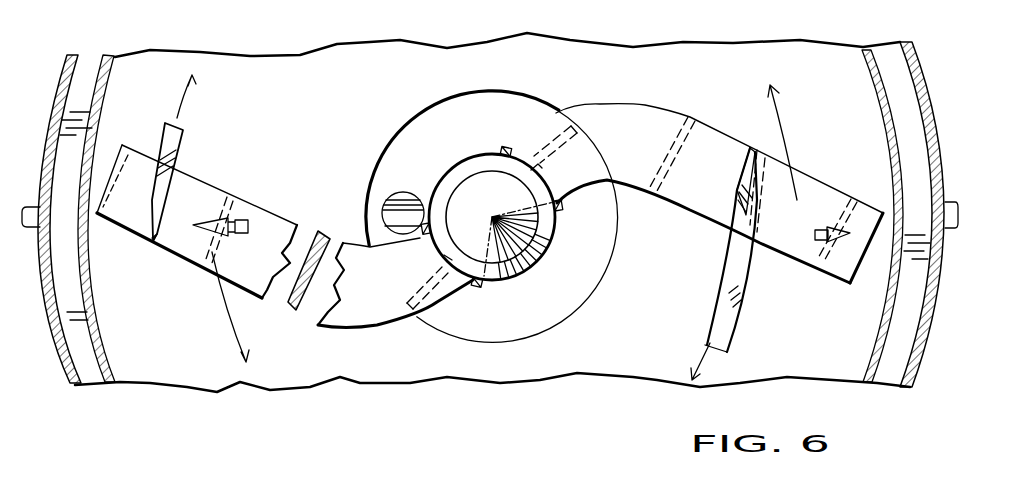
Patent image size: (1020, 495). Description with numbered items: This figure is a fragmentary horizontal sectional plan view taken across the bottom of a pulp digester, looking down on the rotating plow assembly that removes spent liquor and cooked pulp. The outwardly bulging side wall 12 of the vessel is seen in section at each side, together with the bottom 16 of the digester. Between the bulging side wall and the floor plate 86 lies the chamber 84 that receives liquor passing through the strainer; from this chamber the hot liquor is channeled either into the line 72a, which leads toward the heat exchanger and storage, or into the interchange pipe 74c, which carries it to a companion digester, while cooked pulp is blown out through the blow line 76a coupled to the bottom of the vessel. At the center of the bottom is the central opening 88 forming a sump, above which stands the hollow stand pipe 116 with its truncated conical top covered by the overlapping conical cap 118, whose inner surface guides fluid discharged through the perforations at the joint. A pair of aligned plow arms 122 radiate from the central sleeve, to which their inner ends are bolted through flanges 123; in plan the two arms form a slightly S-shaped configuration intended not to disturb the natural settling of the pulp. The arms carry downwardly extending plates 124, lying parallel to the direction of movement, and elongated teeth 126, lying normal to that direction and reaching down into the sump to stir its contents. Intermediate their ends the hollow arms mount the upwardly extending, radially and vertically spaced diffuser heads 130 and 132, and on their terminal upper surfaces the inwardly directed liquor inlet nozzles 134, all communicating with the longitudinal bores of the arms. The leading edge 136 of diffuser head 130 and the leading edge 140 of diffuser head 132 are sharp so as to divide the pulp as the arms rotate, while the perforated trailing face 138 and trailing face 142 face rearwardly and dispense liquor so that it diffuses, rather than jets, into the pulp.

The side wall 12 is at (295, 310).
The bottom 16 is at (192, 360).
The line 72a is at (33, 215).
The interchange pipe 74c is at (935, 212).
The blow line 76a is at (398, 217).
The chamber 84 is at (90, 368).
The floor plate 86 is at (87, 72).
The central opening 88 is at (530, 320).
The stand pipe 116 is at (552, 228).
The conical cap 118 is at (475, 185).
The plow arms 122 is at (647, 110).
The flanges 123 is at (500, 148).
The plates 124 is at (757, 150).
The teeth 126 is at (573, 128).
The diffuser head 130 is at (718, 352).
The diffuser head 132 is at (165, 143).
The liquor inlet nozzles 134 is at (243, 222).
The leading edge 136 is at (755, 148).
The trailing face 138 is at (736, 250).
The leading edge 140 is at (152, 242).
The trailing face 142 is at (183, 128).